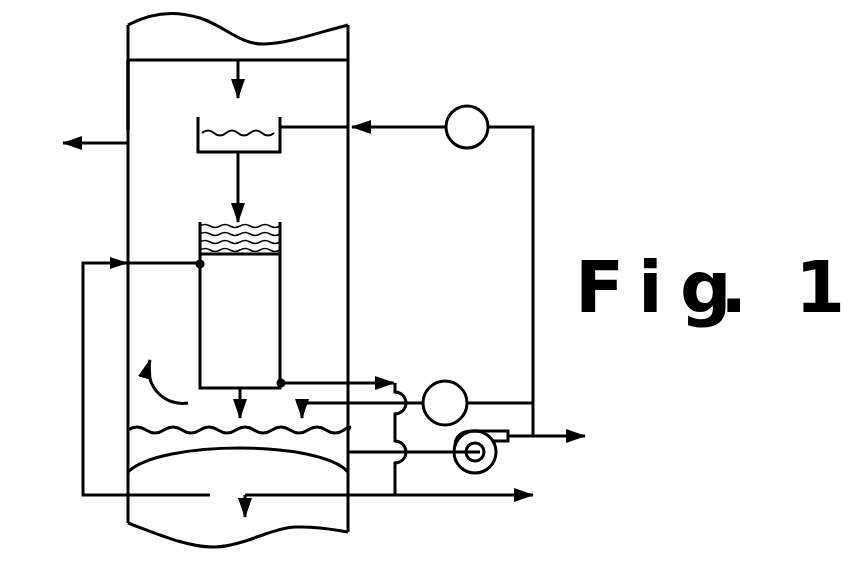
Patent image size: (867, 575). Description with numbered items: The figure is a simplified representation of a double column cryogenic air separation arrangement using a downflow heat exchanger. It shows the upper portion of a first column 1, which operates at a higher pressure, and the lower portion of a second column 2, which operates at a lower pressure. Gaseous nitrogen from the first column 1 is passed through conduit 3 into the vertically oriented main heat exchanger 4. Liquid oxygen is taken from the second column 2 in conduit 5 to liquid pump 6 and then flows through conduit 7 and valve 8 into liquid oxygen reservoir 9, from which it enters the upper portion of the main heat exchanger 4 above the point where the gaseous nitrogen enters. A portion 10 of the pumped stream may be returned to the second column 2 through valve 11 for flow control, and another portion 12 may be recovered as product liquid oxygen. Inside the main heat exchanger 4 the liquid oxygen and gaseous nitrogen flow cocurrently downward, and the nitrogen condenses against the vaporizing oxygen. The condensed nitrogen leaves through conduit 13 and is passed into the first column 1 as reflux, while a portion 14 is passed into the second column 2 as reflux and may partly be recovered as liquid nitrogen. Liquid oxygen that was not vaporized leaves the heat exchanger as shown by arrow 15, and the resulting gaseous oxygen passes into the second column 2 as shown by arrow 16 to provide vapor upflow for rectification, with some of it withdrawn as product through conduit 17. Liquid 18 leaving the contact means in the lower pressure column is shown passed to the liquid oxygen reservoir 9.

The first column 1 is at (353, 518).
The second column 2 is at (128, 95).
The conduit 3 is at (83, 355).
The main heat exchanger 4 is at (240, 305).
The conduit 5 is at (365, 454).
The liquid pump 6 is at (497, 457).
The conduit 7 is at (533, 190).
The valve 8 is at (465, 106).
The liquid oxygen reservoir 9 is at (260, 153).
The portion of stream 10 is at (503, 403).
The valve 11 is at (455, 382).
The portion of stream 12 is at (553, 433).
The conduit 13 is at (328, 383).
The portion of liquid nitrogen 14 is at (483, 495).
The arrow 15 is at (241, 396).
The arrow 16 is at (182, 400).
The conduit 17 is at (100, 147).
The liquid 18 is at (240, 68).